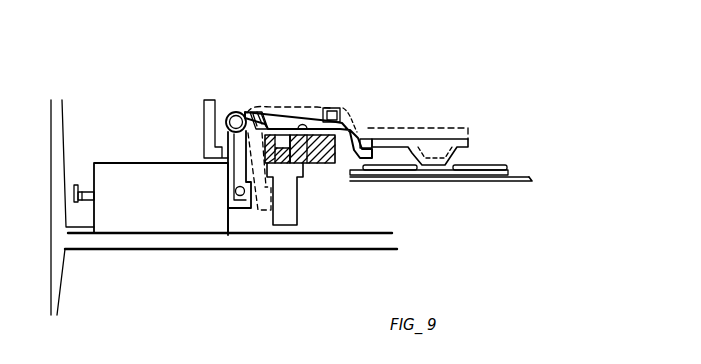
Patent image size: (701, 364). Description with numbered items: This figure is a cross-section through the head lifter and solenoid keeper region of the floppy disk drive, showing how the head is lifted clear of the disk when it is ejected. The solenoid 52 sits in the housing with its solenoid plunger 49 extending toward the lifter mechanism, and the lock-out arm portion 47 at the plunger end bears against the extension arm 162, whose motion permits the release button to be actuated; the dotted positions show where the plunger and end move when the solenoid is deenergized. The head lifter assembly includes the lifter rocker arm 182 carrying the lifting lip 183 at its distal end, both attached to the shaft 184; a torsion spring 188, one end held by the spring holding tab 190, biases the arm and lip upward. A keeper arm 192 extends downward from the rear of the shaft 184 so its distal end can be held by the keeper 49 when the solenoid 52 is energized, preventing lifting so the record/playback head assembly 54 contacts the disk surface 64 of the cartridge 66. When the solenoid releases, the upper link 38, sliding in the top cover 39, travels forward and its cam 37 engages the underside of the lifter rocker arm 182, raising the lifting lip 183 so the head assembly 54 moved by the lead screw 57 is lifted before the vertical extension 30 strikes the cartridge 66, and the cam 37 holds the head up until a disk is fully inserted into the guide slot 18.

The guide slot 18 is at (531, 181).
The vertical extension 30 is at (306, 165).
The cam 37 is at (321, 119).
The upper link 38 is at (334, 165).
The top cover 39 is at (323, 163).
The lock-out arm portion of the solenoid plunger 47 is at (84, 193).
The solenoid plunger 49 is at (233, 210).
The solenoid 52 is at (135, 163).
The head assembly 54 is at (456, 165).
The lead screw 57 is at (405, 112).
The disk surface 64 is at (448, 170).
The cartridge 66 is at (506, 177).
The extension arm 162 is at (84, 193).
The lifter rocker arm 182 is at (343, 101).
The lifting lip 183 is at (368, 127).
The shaft 184 is at (229, 112).
The torsion spring 188 is at (258, 111).
The spring holding tab 190 is at (271, 111).
The keeper arm 192 is at (204, 158).